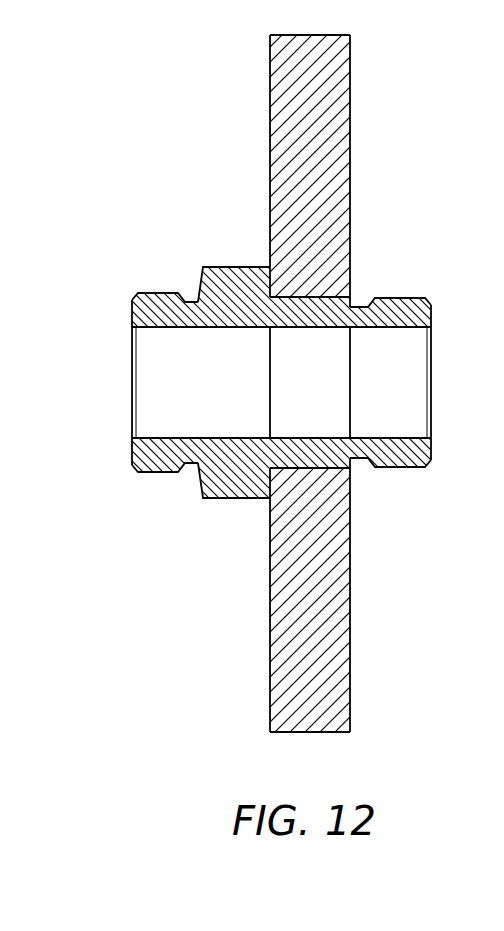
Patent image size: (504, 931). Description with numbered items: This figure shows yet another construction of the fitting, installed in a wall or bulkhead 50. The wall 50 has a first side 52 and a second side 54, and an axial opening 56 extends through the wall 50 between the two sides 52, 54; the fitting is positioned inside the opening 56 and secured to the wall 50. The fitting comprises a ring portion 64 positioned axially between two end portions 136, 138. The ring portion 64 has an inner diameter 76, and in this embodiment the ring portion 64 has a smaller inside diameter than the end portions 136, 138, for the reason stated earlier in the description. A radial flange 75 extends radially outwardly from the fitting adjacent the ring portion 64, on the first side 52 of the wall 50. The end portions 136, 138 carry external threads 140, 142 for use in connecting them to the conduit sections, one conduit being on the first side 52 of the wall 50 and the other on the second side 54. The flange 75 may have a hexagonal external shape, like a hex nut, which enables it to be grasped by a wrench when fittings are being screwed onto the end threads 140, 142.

The wall 50 is at (302, 693).
The first side 52 is at (270, 605).
The second side 54 is at (350, 597).
The axial opening 56 is at (303, 464).
The ring portion 64 is at (318, 312).
The radial flange 75 is at (240, 267).
The inner diameter 76 is at (305, 432).
The end portion 136 is at (152, 472).
The end portion 138 is at (400, 467).
The external threads 140 is at (158, 292).
The external threads 142 is at (408, 297).